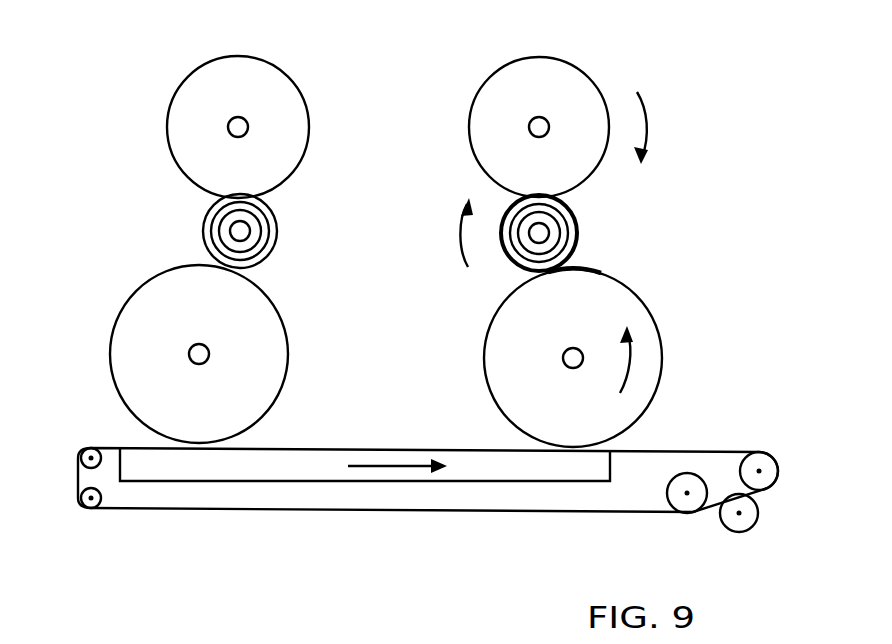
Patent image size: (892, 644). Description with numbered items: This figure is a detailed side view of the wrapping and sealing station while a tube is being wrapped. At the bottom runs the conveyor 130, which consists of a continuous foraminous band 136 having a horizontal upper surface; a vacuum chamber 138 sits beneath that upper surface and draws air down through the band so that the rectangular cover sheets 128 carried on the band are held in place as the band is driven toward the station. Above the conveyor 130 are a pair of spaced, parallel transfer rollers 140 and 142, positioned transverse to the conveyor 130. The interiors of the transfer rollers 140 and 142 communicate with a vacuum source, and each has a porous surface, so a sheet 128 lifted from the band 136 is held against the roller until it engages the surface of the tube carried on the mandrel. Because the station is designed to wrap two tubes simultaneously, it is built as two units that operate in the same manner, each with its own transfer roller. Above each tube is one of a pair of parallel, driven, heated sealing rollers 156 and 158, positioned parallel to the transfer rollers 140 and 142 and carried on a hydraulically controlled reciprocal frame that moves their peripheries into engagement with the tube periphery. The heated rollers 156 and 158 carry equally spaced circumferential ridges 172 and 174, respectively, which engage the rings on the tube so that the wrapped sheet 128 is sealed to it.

The sealing roller 156 is at (198, 82).
The sealing roller 158 is at (530, 70).
The circumferential ridges 172 is at (168, 121).
The circumferential ridges 174 is at (593, 83).
The rectangular sheet 128 is at (572, 205).
The transfer roller 140 is at (128, 313).
The transfer roller 142 is at (657, 340).
The foraminous band 136 is at (317, 450).
The vacuum chamber 138 is at (468, 475).
The conveyor 130 is at (746, 434).